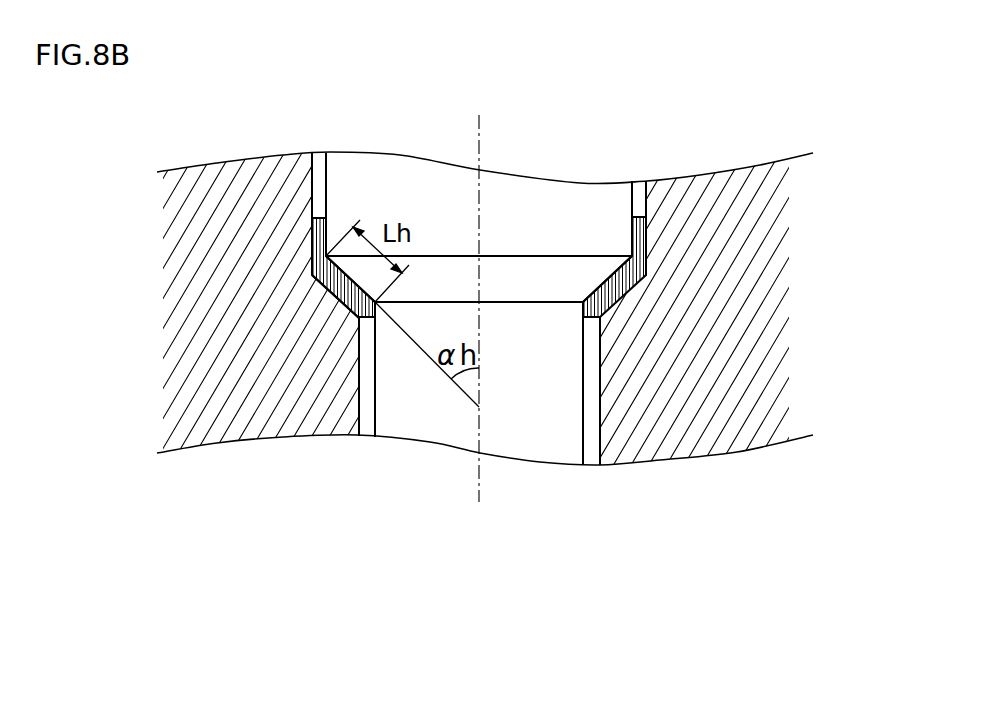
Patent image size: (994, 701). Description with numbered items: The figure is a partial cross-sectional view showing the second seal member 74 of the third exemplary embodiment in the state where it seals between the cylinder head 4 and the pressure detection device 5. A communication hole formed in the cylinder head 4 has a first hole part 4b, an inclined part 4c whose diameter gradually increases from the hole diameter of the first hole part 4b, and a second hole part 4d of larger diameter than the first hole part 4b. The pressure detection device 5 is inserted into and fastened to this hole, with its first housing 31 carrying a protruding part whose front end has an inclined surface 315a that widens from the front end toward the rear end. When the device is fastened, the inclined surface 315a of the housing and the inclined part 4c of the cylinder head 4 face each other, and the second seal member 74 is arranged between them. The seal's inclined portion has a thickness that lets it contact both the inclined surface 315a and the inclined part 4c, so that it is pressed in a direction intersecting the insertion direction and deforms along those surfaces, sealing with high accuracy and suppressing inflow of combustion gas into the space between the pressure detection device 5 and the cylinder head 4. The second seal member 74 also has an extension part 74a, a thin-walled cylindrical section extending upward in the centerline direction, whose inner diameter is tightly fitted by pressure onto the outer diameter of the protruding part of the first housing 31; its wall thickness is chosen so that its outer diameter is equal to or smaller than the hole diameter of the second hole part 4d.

The cylinder head 4 is at (723, 405).
The first hole part 4b is at (588, 446).
The inclined part 4c is at (593, 277).
The second hole part 4d is at (644, 211).
The pressure detection device 5 is at (318, 157).
The second seal member 74 is at (328, 292).
The extension part 74a is at (648, 244).
The first housing 31 is at (369, 412).
The inclined surface 315a is at (350, 317).